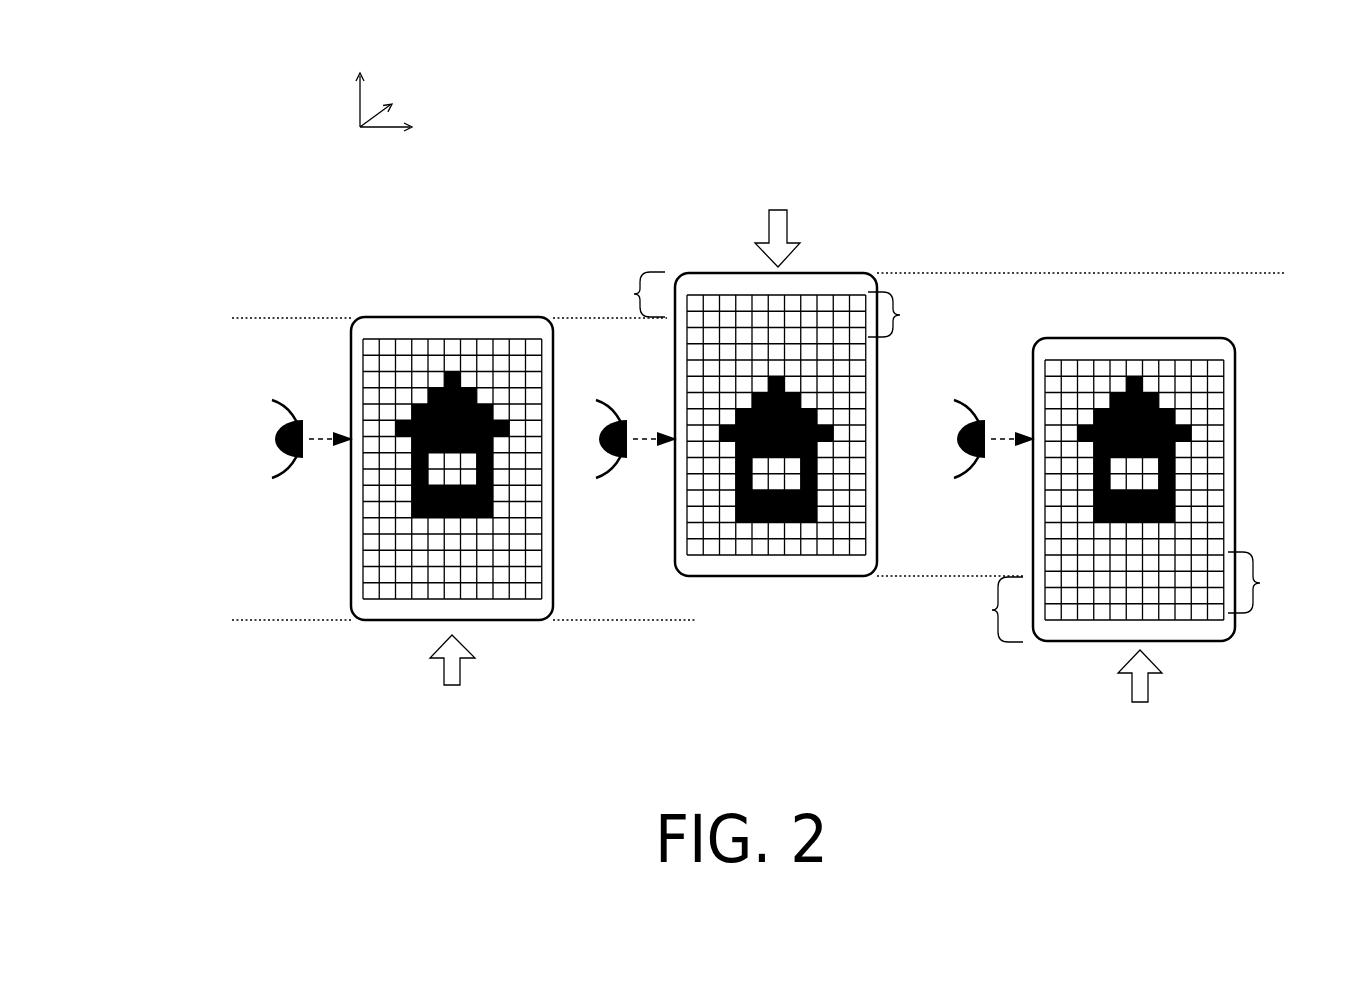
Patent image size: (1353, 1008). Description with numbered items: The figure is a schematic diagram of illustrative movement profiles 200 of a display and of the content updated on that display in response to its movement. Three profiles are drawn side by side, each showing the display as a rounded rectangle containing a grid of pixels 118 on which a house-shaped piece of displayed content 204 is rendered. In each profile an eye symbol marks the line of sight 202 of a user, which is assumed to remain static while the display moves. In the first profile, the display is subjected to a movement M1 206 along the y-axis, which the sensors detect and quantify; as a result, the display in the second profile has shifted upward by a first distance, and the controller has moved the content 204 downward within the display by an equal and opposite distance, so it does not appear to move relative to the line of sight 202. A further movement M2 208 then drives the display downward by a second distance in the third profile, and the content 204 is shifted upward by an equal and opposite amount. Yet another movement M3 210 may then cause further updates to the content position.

The movement profiles 200 is at (226, 106).
The pixels 118 is at (394, 338).
The displayed content 204 is at (458, 375).
The line of sight 202 is at (322, 437).
The movement M1 206 is at (420, 692).
The movement M2 208 is at (741, 177).
The movement M3 210 is at (1108, 726).